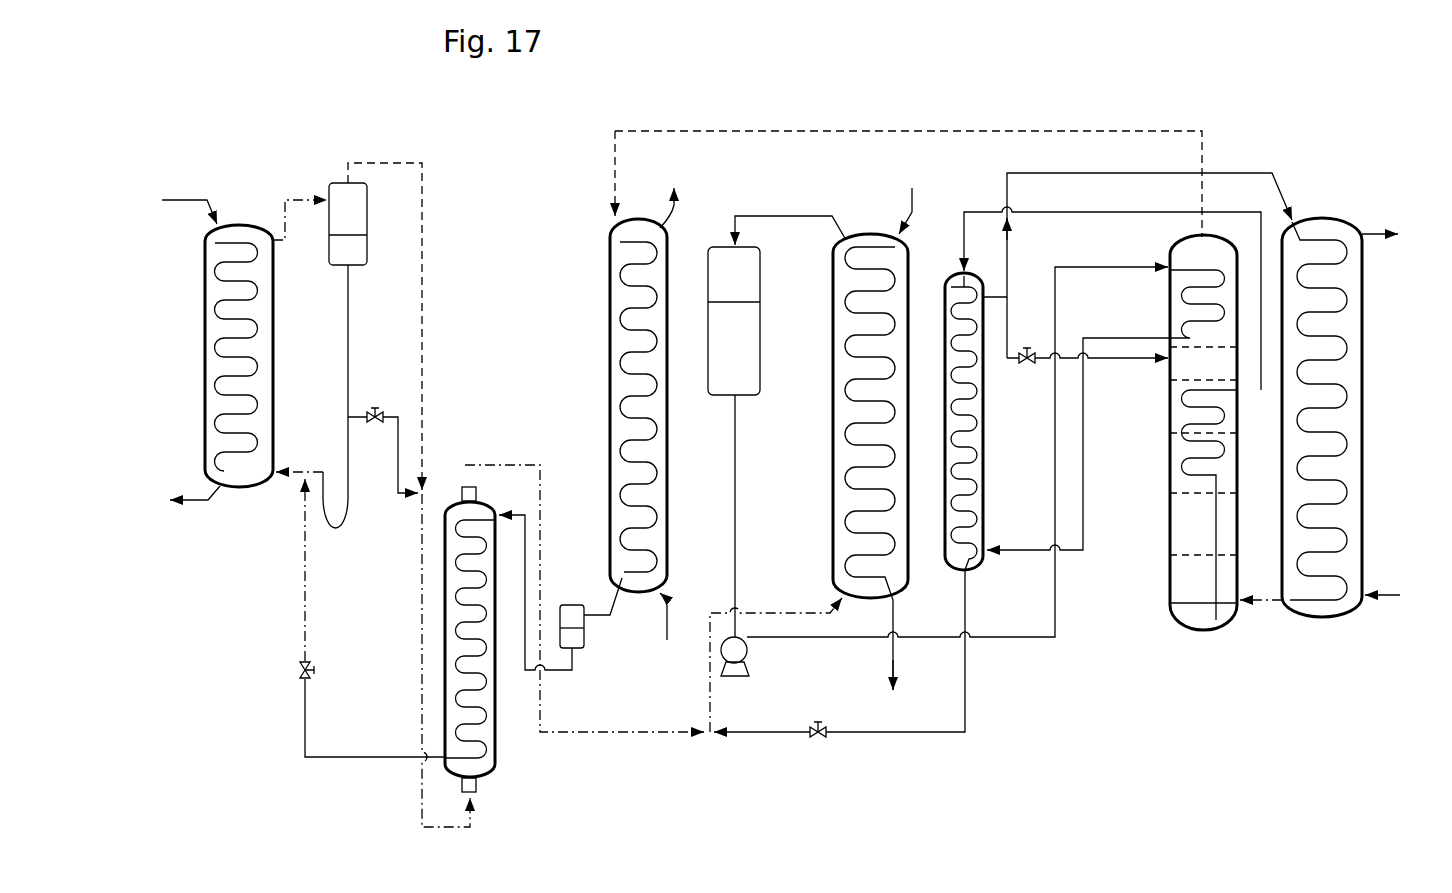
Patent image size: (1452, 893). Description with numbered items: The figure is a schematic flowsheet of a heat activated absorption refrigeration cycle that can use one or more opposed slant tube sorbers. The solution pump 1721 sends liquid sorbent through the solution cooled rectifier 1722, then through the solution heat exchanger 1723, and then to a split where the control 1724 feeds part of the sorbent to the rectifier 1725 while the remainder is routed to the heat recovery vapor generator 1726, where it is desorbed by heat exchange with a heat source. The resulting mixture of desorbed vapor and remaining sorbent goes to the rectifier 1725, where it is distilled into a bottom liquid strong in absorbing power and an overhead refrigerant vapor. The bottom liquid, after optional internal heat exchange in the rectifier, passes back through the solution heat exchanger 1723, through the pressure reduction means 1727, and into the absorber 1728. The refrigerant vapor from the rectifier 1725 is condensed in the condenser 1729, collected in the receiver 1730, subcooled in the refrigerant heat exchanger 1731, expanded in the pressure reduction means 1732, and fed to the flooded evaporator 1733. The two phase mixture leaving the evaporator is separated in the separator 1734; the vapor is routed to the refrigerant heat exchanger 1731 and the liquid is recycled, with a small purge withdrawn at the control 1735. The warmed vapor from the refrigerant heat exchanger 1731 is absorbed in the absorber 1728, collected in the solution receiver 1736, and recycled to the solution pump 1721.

The solution pump 1721 is at (748, 652).
The solution cooled rectifier 1722 is at (1168, 303).
The solution heat exchanger 1723 is at (972, 570).
The control 1724 is at (1028, 366).
The rectifier 1725 is at (1170, 442).
The heat recovery vapor generator 1726 is at (1363, 404).
The pressure reduction means 1727 is at (822, 742).
The absorber 1728 is at (834, 492).
The condenser 1729 is at (612, 380).
The receiver 1730 is at (585, 648).
The refrigerant heat exchanger 1731 is at (497, 757).
The pressure reduction means 1732 is at (292, 672).
The flooded evaporator 1733 is at (204, 343).
The separator 1734 is at (338, 182).
The control 1735 is at (377, 403).
The solution receiver 1736 is at (762, 396).